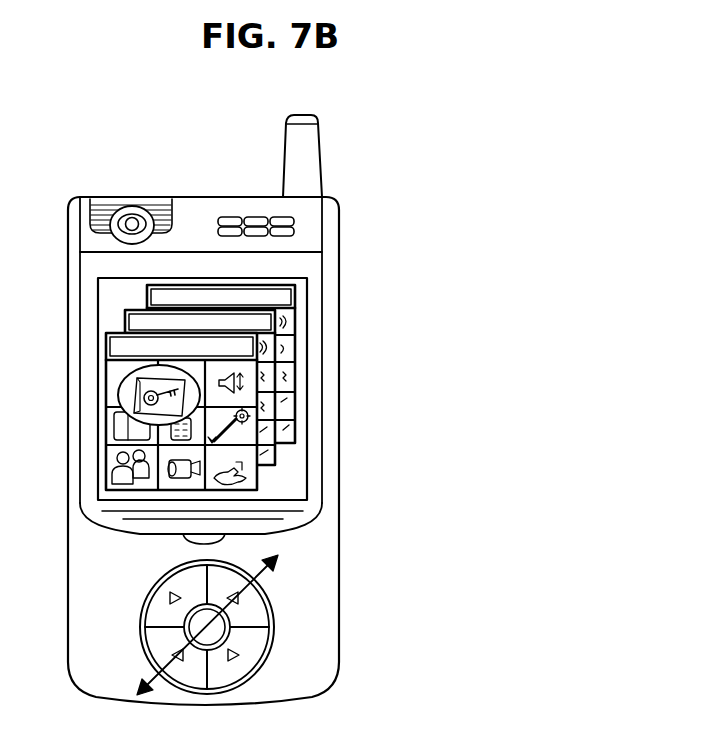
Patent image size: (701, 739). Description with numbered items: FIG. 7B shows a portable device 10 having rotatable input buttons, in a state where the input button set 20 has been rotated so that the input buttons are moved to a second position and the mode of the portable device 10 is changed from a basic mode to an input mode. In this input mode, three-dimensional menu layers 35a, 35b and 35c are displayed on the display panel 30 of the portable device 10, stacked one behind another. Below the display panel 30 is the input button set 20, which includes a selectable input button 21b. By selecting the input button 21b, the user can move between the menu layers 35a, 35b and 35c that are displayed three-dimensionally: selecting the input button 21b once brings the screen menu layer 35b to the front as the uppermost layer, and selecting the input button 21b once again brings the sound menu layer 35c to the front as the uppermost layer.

The portable device 10 is at (388, 138).
The display panel 30 is at (306, 306).
The menu layer 35a is at (259, 486).
The screen menu layer 35b is at (277, 452).
The sound menu layer 35c is at (296, 424).
The input button 21b is at (253, 598).
The input button set 20 is at (269, 640).